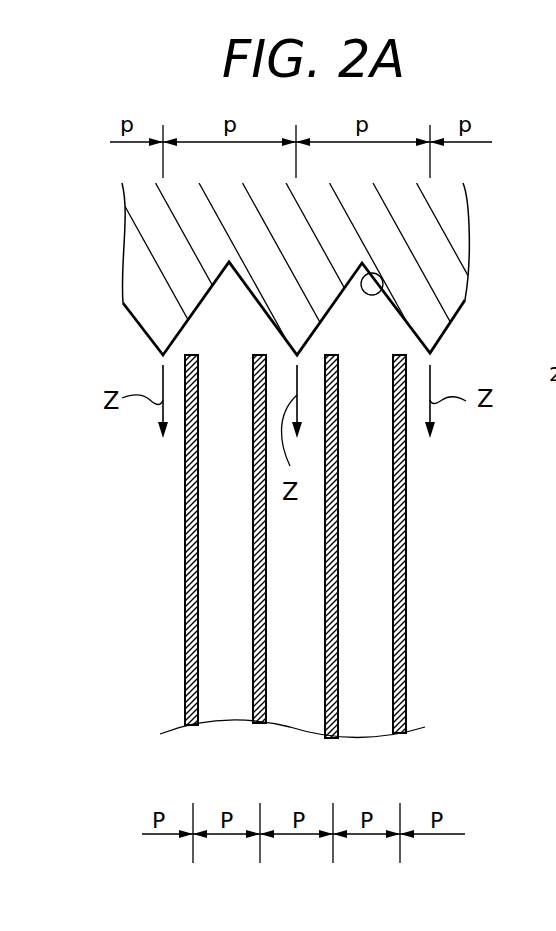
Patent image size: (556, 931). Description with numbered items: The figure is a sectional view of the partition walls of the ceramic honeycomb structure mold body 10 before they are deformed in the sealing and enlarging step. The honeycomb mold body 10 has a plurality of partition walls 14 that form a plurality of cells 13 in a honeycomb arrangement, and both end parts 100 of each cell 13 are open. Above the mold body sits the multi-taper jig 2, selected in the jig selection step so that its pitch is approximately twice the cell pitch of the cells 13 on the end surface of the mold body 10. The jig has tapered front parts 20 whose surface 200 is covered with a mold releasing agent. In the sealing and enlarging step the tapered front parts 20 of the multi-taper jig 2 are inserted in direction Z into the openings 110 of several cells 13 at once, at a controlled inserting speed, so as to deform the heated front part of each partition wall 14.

The multi-taper jig 2 is at (367, 205).
The surface of the tapered front part 200 is at (363, 263).
The tapered front part 20 is at (422, 292).
The end part 100 is at (234, 326).
The opening 110 is at (258, 355).
The partition wall 14 is at (255, 657).
The cell 13 is at (223, 570).
The ceramic honeycomb structure mold body 10 is at (428, 607).